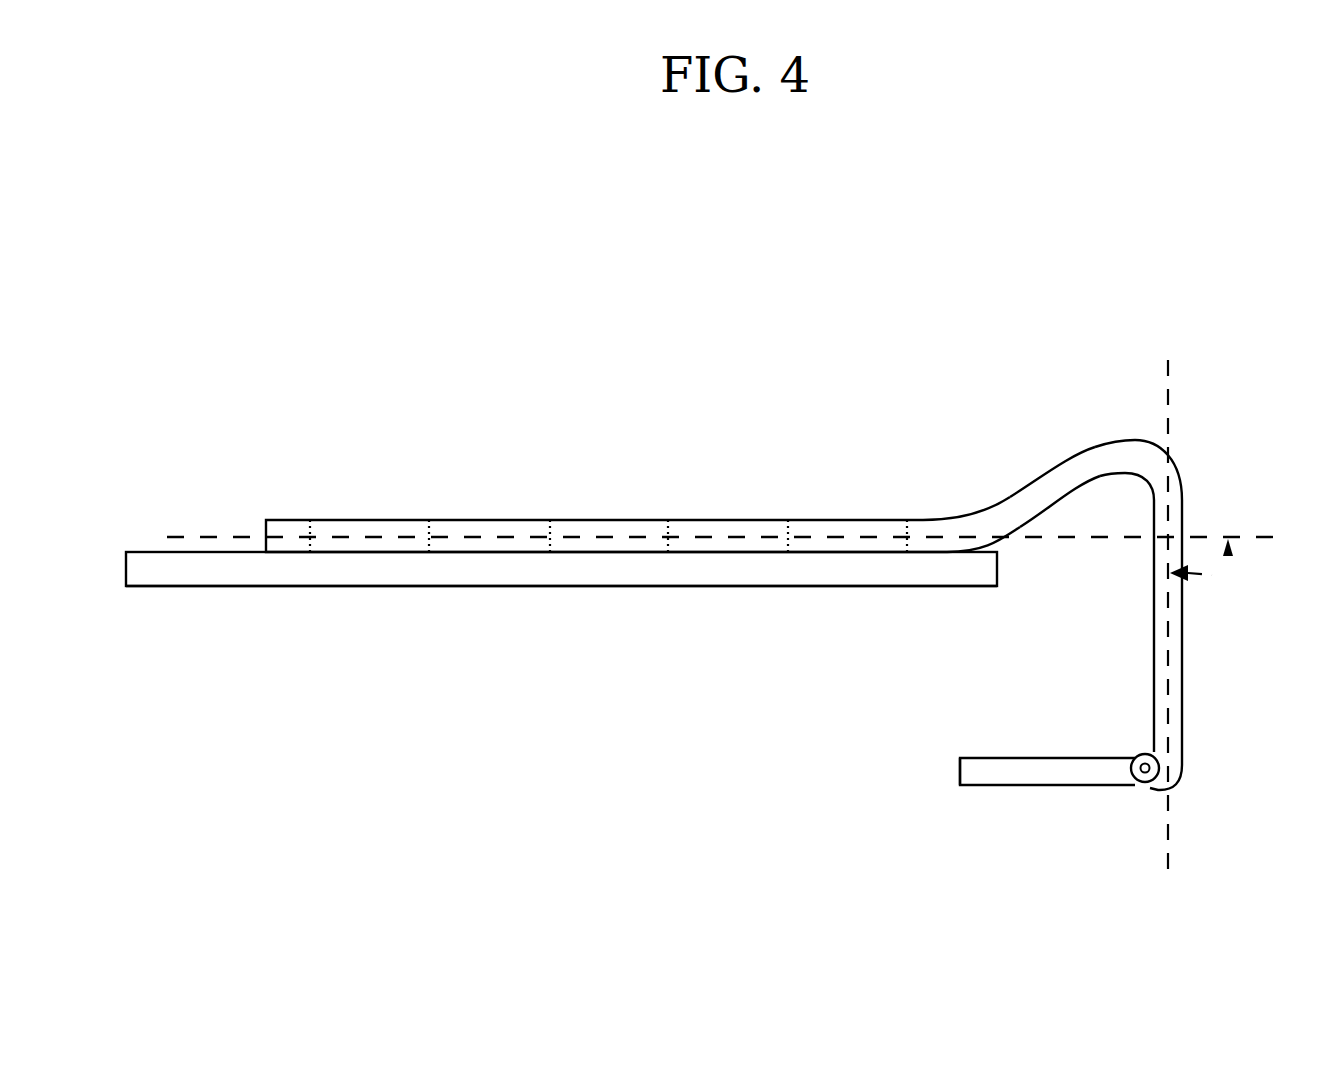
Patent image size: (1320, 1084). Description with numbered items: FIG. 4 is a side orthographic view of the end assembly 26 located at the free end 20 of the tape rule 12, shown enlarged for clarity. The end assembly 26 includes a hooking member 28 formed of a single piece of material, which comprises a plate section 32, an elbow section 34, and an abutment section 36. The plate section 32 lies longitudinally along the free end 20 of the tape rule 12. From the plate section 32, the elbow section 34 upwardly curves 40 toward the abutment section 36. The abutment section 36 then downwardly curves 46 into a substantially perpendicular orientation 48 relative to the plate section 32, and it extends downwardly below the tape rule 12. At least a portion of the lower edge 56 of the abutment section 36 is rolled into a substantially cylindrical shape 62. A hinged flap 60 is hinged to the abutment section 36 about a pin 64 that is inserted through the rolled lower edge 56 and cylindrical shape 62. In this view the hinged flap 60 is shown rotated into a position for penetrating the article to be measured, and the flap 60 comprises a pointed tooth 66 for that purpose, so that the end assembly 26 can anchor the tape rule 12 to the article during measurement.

The tape rule 12 is at (167, 587).
The free end 20 is at (227, 587).
The end assembly 26 is at (338, 300).
The hooking member 28 is at (285, 518).
The plate section 32 is at (453, 518).
The elbow section 34 is at (1050, 467).
The abutment section 36 is at (1182, 517).
The upward curve 40 is at (993, 502).
The downward curve 46 is at (1152, 440).
The substantially perpendicular orientation 48 is at (1226, 578).
The lower edge 56 is at (1178, 768).
The hinged flap 60 is at (990, 785).
The rolled cylindrical shape 62 is at (1143, 788).
The pin 64 is at (1143, 762).
The pointed tooth 66 is at (960, 770).